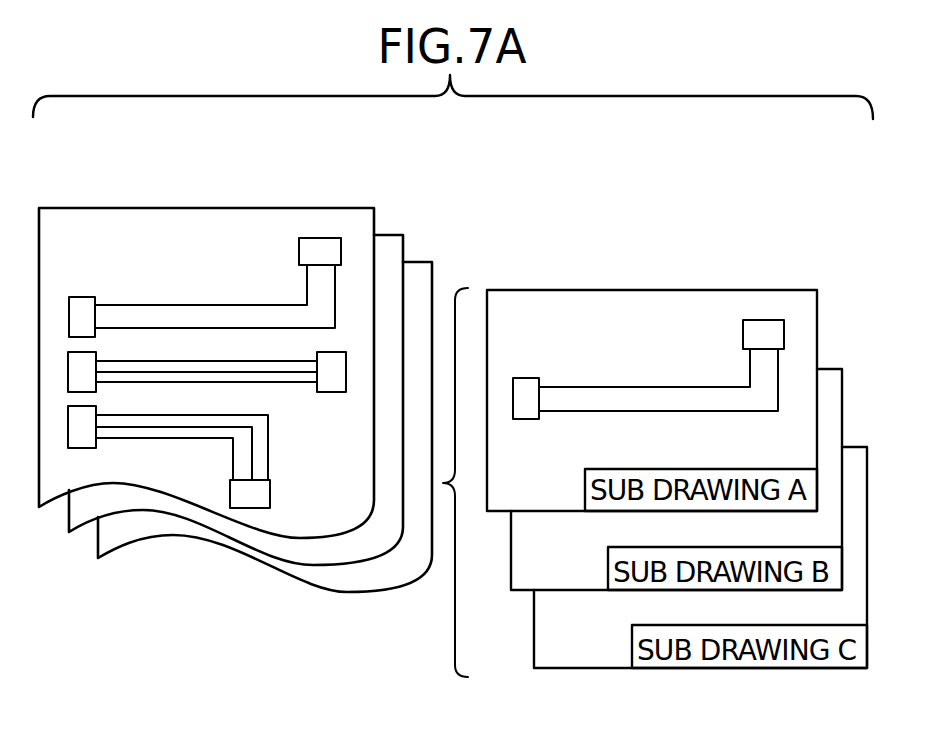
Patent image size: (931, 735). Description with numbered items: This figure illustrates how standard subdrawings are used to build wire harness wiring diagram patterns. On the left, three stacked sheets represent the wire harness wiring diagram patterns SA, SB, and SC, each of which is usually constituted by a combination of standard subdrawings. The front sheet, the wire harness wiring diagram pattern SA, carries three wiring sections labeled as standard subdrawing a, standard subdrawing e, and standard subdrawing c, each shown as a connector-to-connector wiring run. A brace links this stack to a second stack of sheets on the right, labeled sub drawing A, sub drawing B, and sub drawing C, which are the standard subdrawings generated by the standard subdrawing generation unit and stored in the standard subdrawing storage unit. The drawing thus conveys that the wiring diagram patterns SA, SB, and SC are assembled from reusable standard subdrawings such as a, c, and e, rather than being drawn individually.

The wire harness wiring diagram pattern SA is at (349, 207).
The wire harness wiring diagram pattern SB is at (392, 234).
The wire harness wiring diagram pattern SC is at (435, 261).
The standard subdrawing a is at (118, 300).
The standard subdrawing e is at (120, 352).
The standard subdrawing c is at (120, 406).